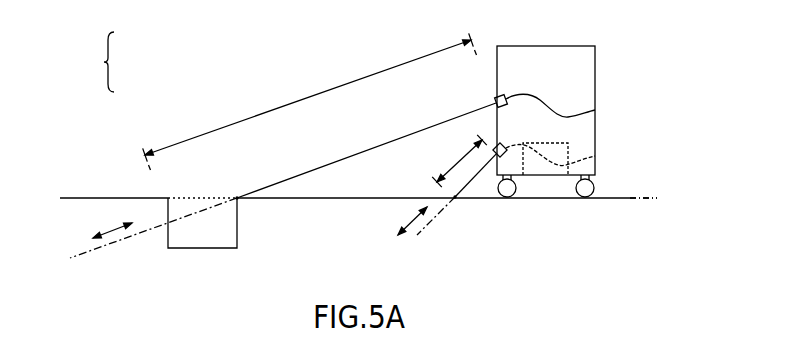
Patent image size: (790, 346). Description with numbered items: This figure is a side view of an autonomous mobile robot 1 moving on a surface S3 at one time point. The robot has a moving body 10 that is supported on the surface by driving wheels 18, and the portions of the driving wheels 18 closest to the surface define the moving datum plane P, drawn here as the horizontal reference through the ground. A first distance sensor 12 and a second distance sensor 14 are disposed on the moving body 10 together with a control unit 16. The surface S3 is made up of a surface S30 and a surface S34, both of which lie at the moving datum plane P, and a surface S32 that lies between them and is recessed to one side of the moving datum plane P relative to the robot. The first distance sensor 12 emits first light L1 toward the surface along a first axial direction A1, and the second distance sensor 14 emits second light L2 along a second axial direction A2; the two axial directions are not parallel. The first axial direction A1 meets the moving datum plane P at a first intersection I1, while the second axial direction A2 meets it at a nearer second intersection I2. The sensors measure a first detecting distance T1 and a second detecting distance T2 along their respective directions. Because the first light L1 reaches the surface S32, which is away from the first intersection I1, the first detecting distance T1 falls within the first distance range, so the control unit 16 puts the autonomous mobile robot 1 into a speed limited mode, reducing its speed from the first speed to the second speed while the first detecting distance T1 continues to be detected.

The autonomous mobile robot 1 is at (564, 119).
The moving body 10 is at (588, 57).
The first distance sensor 12 is at (595, 110).
The second distance sensor 14 is at (594, 158).
The control unit 16 is at (590, 150).
The driving wheels 18 is at (585, 197).
The surface S3 is at (94, 62).
The surface S30 is at (617, 215).
The surface S32 is at (205, 268).
The surface S34 is at (72, 197).
The first light L1 is at (360, 150).
The second light L2 is at (481, 171).
The first detecting distance T1 is at (310, 101).
The second detecting distance T2 is at (459, 161).
The first axial direction A1 is at (112, 224).
The second axial direction A2 is at (405, 220).
The first intersection I1 is at (238, 200).
The second intersection I2 is at (457, 200).
The moving datum plane P is at (647, 199).